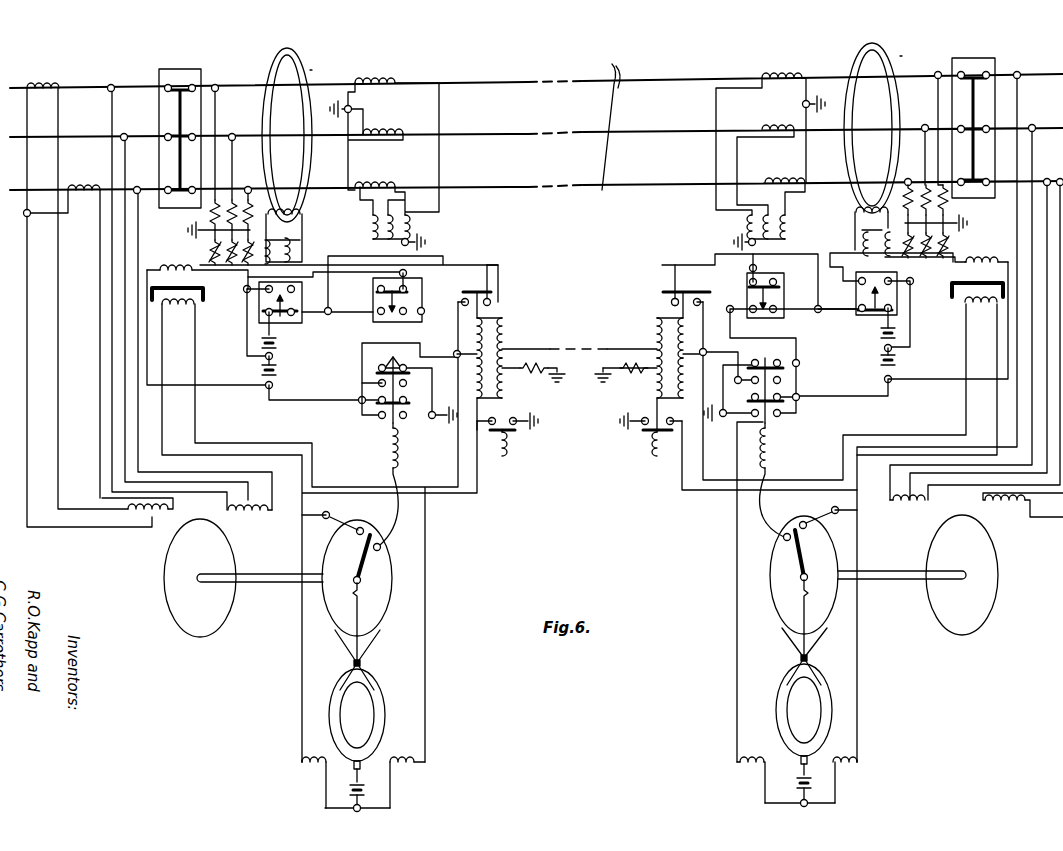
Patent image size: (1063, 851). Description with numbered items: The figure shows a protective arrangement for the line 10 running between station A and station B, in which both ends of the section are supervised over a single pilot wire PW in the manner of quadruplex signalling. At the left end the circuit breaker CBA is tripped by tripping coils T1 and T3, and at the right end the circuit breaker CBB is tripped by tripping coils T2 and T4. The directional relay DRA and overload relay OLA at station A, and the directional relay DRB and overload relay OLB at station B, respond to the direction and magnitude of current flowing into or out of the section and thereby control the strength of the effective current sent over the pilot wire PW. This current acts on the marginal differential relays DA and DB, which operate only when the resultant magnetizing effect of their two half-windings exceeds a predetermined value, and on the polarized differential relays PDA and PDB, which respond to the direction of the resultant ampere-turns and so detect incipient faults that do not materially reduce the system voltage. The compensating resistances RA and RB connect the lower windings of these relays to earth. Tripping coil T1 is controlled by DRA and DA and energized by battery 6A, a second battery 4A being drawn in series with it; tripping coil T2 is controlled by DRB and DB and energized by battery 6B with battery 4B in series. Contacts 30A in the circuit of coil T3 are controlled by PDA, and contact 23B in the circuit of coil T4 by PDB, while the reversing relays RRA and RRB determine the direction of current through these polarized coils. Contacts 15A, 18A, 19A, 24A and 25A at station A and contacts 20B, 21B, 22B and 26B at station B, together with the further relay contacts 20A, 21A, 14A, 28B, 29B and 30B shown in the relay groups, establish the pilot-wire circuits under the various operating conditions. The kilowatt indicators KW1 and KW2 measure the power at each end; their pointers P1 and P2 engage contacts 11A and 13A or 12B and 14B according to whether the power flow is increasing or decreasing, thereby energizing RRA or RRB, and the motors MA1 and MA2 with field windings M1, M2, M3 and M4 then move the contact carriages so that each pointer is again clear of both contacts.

The circuit breaker CBA is at (179, 128).
The directional relay DRA is at (287, 140).
The station A is at (320, 60).
The overload relay OLA is at (384, 150).
The line 10 is at (602, 124).
The overload relay OLB is at (770, 148).
The directional relay DRB is at (872, 139).
The station B is at (906, 46).
The circuit breaker CBB is at (973, 118).
The tripping coil T1 is at (275, 260).
The tripping coil T3 is at (178, 308).
The relay 20A is at (240, 296).
The contact 18A is at (291, 316).
The battery 6A is at (277, 343).
The battery 4A is at (277, 370).
The relay contact 21A is at (405, 291).
The relay 14A is at (399, 308).
The contact 15A is at (393, 357).
The contact 25A is at (378, 383).
The contact 19A is at (407, 400).
The contact 24A is at (378, 417).
The reversing relay RRA is at (375, 484).
The polarized differential relay PDA is at (496, 347).
The pilot wire PW is at (578, 349).
The compensating resistance RA is at (533, 378).
The differential relay DA is at (500, 417).
The contacts 30A is at (507, 452).
The polarized differential relay PDB is at (661, 347).
The compensating resistance RB is at (626, 378).
The differential relay DB is at (663, 417).
The contact 23B is at (654, 452).
The contact 30B is at (670, 300).
The relay 29B is at (749, 282).
The relay contact 28B is at (750, 312).
The contact 21B is at (858, 284).
The battery 6B is at (880, 333).
The battery 4B is at (880, 360).
The contact 20B is at (760, 362).
The contact 26B is at (781, 378).
The contact 22B is at (781, 395).
The reversing relay RRB is at (783, 480).
The tripping coil T2 is at (986, 246).
The tripping coil T4 is at (981, 306).
The pointer P1 is at (372, 578).
The contact 11A is at (381, 547).
The contact 13A is at (362, 528).
The kilowatt indicator KW1 is at (375, 648).
The motor MA1 is at (357, 722).
The motor field winding M1 is at (315, 773).
The motor field winding M2 is at (407, 773).
The pointer P2 is at (800, 555).
The contact 12B is at (783, 537).
The contact 14B is at (806, 522).
The kilowatt indicator KW2 is at (819, 646).
The motor MA2 is at (804, 716).
The motor field winding M3 is at (752, 769).
The motor field winding M4 is at (846, 769).